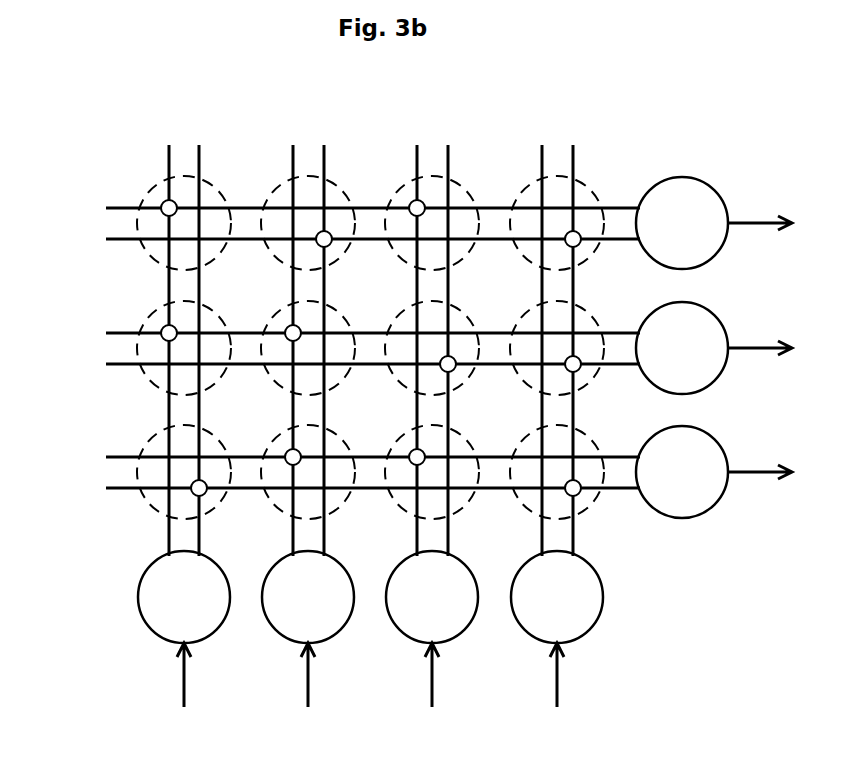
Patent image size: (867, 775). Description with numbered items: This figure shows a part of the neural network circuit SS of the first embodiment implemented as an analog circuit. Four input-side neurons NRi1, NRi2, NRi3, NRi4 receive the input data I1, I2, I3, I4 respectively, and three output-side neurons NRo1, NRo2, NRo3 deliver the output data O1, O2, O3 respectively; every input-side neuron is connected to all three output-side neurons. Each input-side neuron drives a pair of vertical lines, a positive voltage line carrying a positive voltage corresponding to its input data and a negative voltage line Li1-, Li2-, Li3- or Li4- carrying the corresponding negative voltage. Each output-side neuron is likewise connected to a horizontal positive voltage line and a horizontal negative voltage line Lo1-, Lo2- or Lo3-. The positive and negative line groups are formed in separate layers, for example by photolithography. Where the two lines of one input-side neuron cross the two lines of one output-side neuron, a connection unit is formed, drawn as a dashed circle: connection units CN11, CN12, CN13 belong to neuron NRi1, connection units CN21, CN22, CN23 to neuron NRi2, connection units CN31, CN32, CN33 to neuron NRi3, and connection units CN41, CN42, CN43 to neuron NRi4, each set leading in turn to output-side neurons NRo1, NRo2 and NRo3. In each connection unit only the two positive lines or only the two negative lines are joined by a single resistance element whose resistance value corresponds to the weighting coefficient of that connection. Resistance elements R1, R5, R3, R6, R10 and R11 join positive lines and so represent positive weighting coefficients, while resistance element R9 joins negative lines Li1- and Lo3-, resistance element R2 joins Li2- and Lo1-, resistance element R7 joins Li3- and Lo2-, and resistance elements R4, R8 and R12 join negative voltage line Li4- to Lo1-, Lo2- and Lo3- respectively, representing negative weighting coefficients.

The neural network circuit SS is at (701, 690).
The negative voltage line Li1- is at (199, 160).
The negative voltage line Li2- is at (324, 160).
The negative voltage line Li3- is at (448, 160).
The negative voltage line Li4- is at (573, 160).
The negative voltage line Lo1- is at (120, 239).
The negative voltage line Lo2- is at (120, 364).
The negative voltage line Lo3- is at (120, 488).
The connection unit CN11 is at (148, 262).
The connection unit CN21 is at (274, 262).
The connection unit CN31 is at (402, 262).
The connection unit CN41 is at (592, 262).
The connection unit CN12 is at (148, 387).
The connection unit CN22 is at (274, 387).
The connection unit CN32 is at (402, 387).
The connection unit CN42 is at (592, 387).
The connection unit CN13 is at (148, 511).
The connection unit CN23 is at (274, 511).
The connection unit CN33 is at (404, 518).
The connection unit CN43 is at (592, 511).
The resistance element R1 is at (169, 208).
The resistance element R2 is at (324, 239).
The resistance element R3 is at (417, 208).
The resistance element R4 is at (573, 239).
The resistance element R5 is at (169, 333).
The resistance element R6 is at (293, 333).
The resistance element R7 is at (448, 364).
The resistance element R8 is at (573, 364).
The resistance element R9 is at (199, 488).
The resistance element R10 is at (293, 457).
The resistance element R11 is at (417, 457).
The resistance element R12 is at (573, 488).
The output-side neuron NRo1 is at (682, 223).
The output-side neuron NRo2 is at (682, 348).
The output-side neuron NRo3 is at (682, 472).
The input-side neuron NRi1 is at (184, 597).
The input-side neuron NRi2 is at (308, 597).
The input-side neuron NRi3 is at (432, 597).
The input-side neuron NRi4 is at (557, 597).
The output data O1 is at (760, 228).
The output data O2 is at (760, 353).
The output data O3 is at (760, 477).
The input data I1 is at (186, 690).
The input data I2 is at (310, 690).
The input data I3 is at (434, 690).
The input data I4 is at (559, 690).